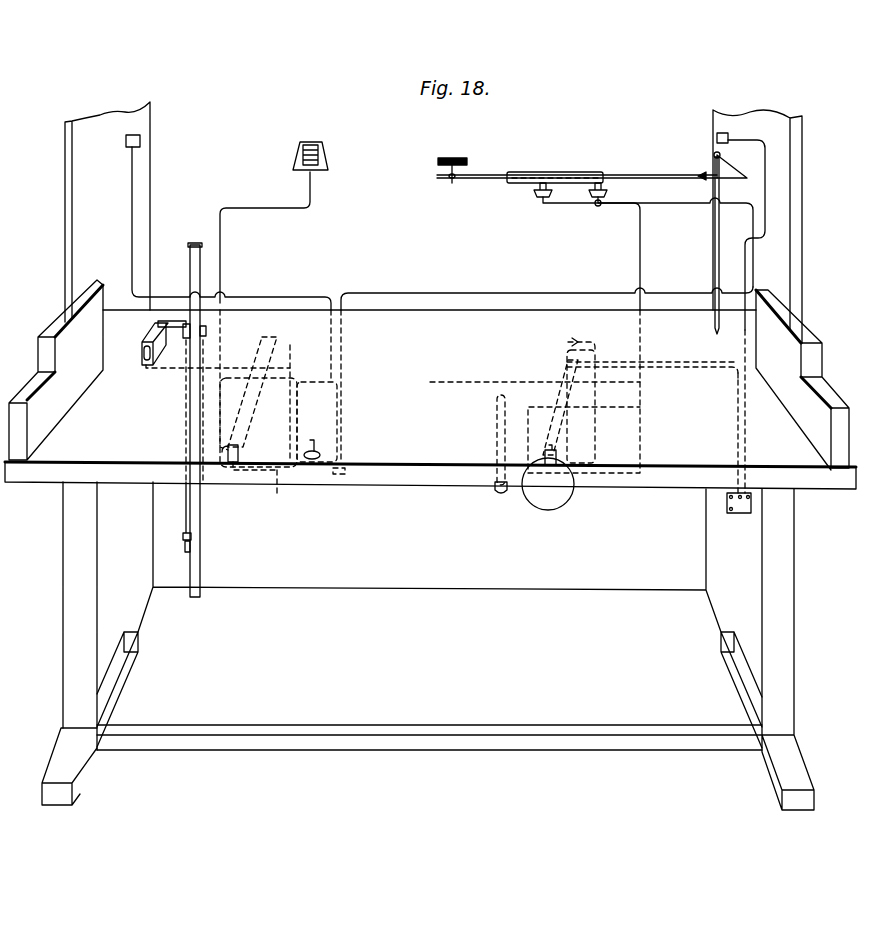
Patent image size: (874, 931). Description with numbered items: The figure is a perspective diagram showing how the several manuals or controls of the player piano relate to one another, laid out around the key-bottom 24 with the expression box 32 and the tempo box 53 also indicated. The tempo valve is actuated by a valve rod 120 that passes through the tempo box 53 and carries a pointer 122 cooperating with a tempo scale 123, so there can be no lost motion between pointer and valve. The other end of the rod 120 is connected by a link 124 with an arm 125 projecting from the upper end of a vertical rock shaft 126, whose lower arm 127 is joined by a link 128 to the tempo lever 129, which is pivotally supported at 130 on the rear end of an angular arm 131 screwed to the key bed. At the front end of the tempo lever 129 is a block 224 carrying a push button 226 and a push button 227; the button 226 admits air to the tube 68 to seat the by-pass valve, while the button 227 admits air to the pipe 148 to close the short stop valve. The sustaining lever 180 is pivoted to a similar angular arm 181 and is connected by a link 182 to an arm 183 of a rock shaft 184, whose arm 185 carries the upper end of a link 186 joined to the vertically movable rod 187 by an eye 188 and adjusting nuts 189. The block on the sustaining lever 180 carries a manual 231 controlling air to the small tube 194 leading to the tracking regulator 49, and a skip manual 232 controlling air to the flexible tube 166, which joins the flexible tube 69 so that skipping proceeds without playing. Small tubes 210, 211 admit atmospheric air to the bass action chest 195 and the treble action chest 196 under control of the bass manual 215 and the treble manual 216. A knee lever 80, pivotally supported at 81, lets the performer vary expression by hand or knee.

The key-bottom 24 is at (440, 478).
The expression box 32 is at (727, 503).
The tracking regulator 49 is at (316, 149).
The tempo box 53 is at (571, 172).
The tube 68 is at (738, 446).
The flexible tube 69 is at (672, 205).
The knee lever 80 is at (503, 492).
The pivot 81 is at (495, 445).
The valve rod 120 is at (485, 180).
The pointer 122 is at (456, 177).
The tempo scale 123 is at (455, 157).
The link 124 is at (725, 180).
The arm 125 is at (732, 168).
The vertical rock shaft 126 is at (715, 250).
The lower arm 127 is at (752, 360).
The link 128 is at (668, 365).
The tempo lever 129 is at (567, 375).
The pivot 130 is at (570, 340).
The angular arm 131 is at (602, 362).
The pipe 148 is at (577, 205).
The flexible tube 166 is at (445, 384).
The sustaining lever 180 is at (258, 422).
The angular arm 181 is at (292, 375).
The link 182 is at (262, 340).
The arm 183 is at (142, 356).
The rock shaft 184 is at (158, 323).
The arm 185 is at (186, 322).
The link 186 is at (186, 400).
The vertically movable rod 187 is at (203, 540).
The eye 188 is at (183, 536).
The adjusting nuts 189 is at (185, 547).
The small tube 194 is at (270, 212).
The bass action chest 195 is at (142, 143).
The treble action chest 196 is at (717, 135).
The small tube 210 is at (134, 221).
The small tube 211 is at (466, 289).
The bass manual 215 is at (345, 470).
The treble manual 216 is at (315, 439).
The block 224 is at (550, 468).
The push button 226 is at (556, 447).
The push button 227 is at (562, 502).
The manual 231 is at (233, 468).
The skip manual 232 is at (239, 452).